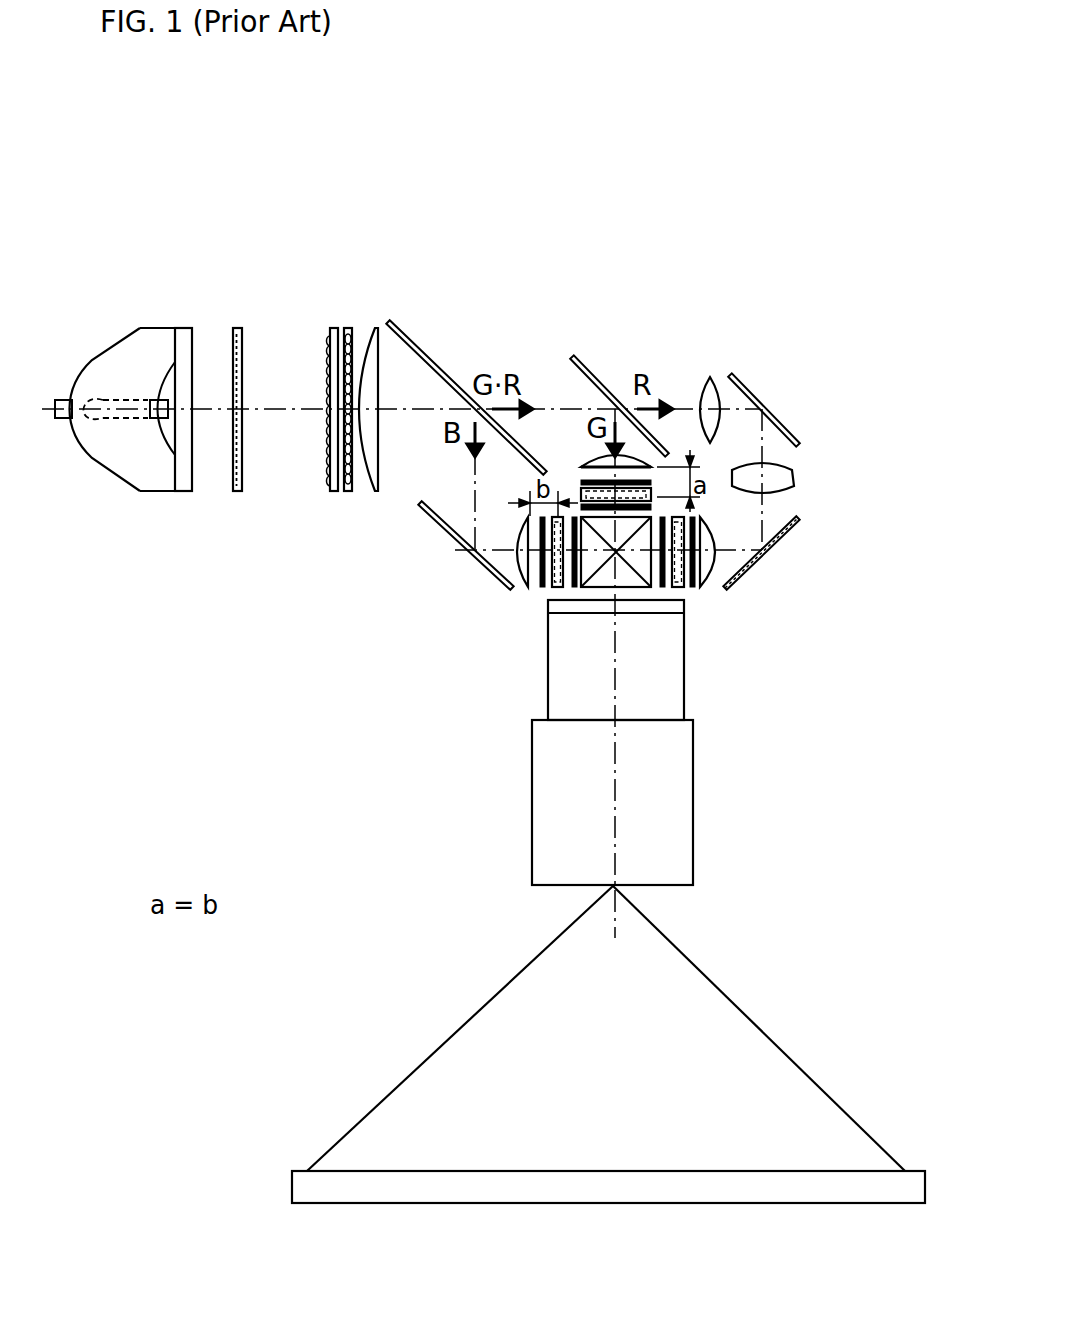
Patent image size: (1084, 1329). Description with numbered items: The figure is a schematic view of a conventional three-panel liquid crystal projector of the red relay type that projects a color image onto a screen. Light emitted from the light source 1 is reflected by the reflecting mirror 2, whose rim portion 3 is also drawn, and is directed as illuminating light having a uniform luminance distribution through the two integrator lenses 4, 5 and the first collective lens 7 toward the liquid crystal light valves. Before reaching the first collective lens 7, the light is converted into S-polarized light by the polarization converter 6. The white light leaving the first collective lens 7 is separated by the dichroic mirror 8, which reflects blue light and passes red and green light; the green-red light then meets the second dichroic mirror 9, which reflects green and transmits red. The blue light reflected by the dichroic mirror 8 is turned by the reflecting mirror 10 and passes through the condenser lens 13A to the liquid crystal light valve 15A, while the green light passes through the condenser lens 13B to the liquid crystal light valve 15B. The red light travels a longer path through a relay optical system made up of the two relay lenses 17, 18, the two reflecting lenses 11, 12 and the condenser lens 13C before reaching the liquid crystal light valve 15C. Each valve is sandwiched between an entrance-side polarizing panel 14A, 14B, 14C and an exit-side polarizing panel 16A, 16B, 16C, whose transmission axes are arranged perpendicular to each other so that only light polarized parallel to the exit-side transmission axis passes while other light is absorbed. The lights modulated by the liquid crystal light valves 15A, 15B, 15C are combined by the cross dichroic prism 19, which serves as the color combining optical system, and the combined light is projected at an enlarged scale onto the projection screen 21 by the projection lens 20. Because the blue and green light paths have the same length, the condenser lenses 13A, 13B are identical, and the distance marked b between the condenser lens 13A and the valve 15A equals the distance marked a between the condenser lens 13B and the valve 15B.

The light source 1 is at (92, 428).
The reflecting mirror 2 is at (93, 378).
The light source unit 3 is at (191, 480).
The integrator lens 4 is at (233, 328).
The integrator lens 5 is at (335, 327).
The polarization converter 6 is at (348, 327).
The first collective lens 7 is at (373, 327).
The dichroic mirror 8 is at (432, 378).
The second dichroic mirror 9 is at (572, 357).
The reflecting mirror 10 is at (447, 528).
The reflecting lens 11 is at (735, 373).
The reflecting lens 12 is at (799, 522).
The condenser lens 13A is at (520, 590).
The condenser lens 13B is at (650, 458).
The condenser lens 13C is at (708, 590).
The polarizing panel 14A is at (541, 590).
The polarizing panel 14B is at (582, 480).
The polarizing panel 14C is at (692, 592).
The liquid crystal light valve 15A is at (556, 590).
The liquid crystal light valve 15B is at (582, 495).
The liquid crystal light valve 15C is at (680, 592).
The polarizing panel 16A is at (574, 590).
The polarizing panel 16B is at (582, 508).
The polarizing panel 16C is at (667, 592).
The relay lens 17 is at (718, 376).
The relay lens 18 is at (797, 478).
The cross dichroic prism 19 is at (622, 575).
The projection lens 20 is at (678, 838).
The projection screen 21 is at (796, 1171).